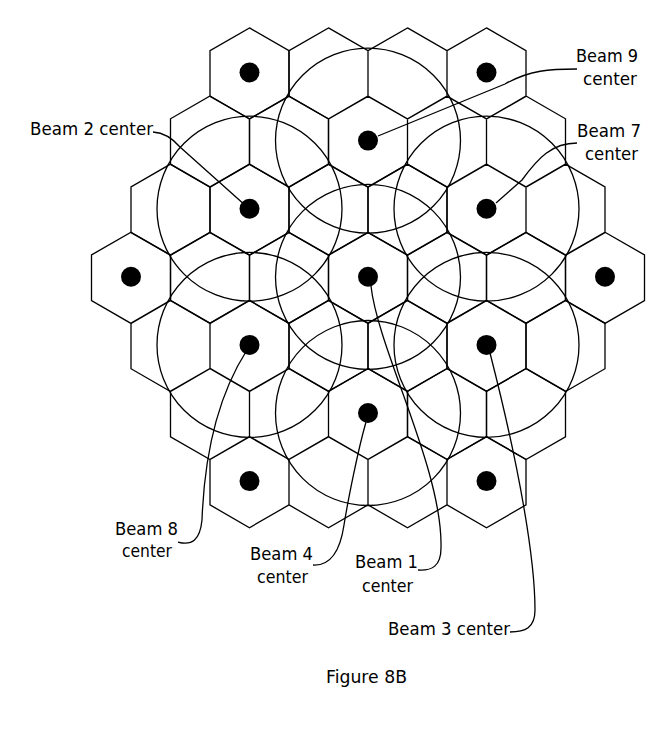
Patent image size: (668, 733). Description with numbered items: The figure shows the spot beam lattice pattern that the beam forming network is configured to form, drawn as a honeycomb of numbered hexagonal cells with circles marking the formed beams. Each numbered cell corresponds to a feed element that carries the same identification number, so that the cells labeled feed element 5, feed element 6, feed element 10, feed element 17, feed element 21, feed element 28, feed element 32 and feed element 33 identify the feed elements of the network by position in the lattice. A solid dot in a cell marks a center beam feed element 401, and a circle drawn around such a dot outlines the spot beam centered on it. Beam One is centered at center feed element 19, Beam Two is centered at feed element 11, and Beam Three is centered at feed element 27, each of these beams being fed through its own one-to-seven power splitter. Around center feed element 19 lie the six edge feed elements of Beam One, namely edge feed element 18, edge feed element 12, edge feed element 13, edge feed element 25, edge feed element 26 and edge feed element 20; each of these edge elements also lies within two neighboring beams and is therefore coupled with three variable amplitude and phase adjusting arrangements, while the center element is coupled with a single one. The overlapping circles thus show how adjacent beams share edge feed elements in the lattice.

The center beam feed element 401 is at (245, 73).
The feed element 5 is at (210, 141).
The feed element 6 is at (289, 141).
The feed element 10 is at (170, 209).
The feed element 11 is at (249, 209).
The edge feed element 12 is at (328, 209).
The edge feed element 13 is at (407, 209).
The feed element 17 is at (210, 277).
The edge feed element 18 is at (289, 277).
The center feed element 19 is at (368, 277).
The edge feed element 20 is at (447, 277).
The feed element 21 is at (526, 277).
The edge feed element 25 is at (328, 345).
The edge feed element 26 is at (407, 345).
The feed element 27 is at (486, 345).
The feed element 28 is at (565, 345).
The feed element 32 is at (447, 413).
The feed element 33 is at (526, 413).